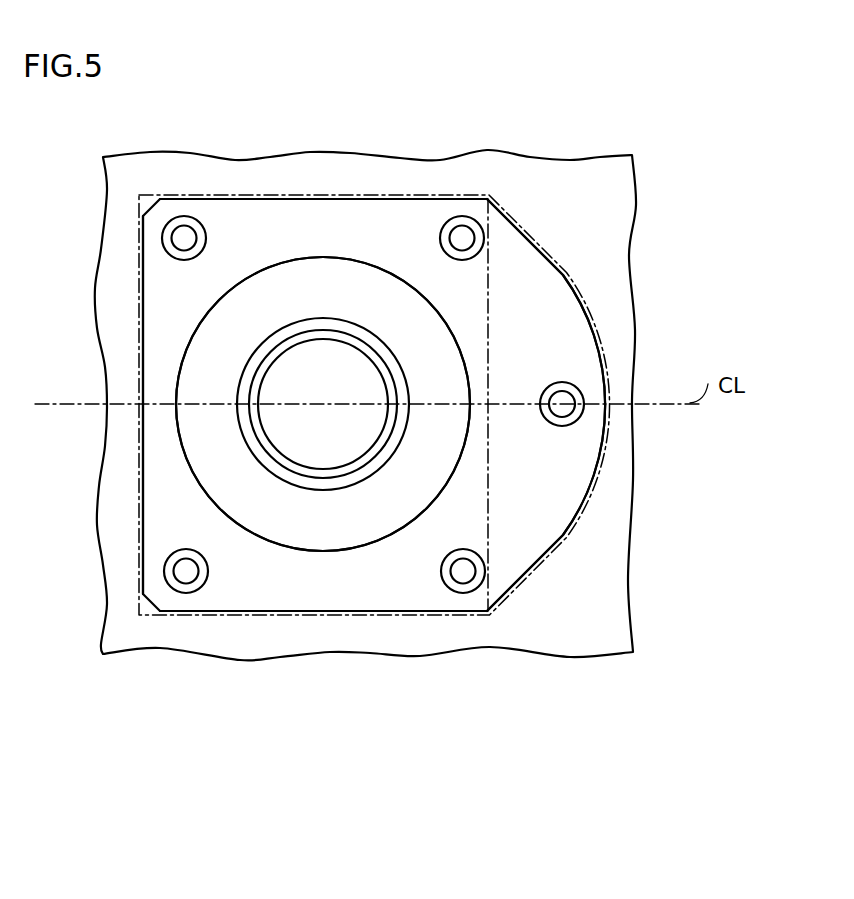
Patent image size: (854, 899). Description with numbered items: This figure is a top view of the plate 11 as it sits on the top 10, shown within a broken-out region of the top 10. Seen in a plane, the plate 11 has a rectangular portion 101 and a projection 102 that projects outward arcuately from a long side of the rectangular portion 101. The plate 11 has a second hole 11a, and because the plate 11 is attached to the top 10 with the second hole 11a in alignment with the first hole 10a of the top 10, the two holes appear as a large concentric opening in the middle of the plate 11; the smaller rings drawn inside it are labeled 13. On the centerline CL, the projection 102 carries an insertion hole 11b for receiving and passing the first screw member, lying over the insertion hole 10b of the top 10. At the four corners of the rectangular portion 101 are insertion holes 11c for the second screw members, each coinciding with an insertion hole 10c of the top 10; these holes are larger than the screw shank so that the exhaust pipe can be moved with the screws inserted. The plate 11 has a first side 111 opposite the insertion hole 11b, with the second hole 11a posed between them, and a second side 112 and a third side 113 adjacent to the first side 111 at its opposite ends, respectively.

The top 10 is at (587, 212).
The first hole 10a is at (442, 317).
The insertion hole 10b is at (568, 392).
The insertion hole 10c is at (169, 229).
The plate 11 is at (520, 512).
The second hole 11a is at (463, 453).
The insertion hole 11b is at (580, 417).
The insertion hole 11c is at (183, 226).
The bearing / shaft opening 13 is at (385, 377).
The rectangular portion 101 is at (337, 228).
The projection 102 is at (527, 255).
The first side 111 is at (138, 387).
The second side 112 is at (273, 197).
The third side 113 is at (303, 617).